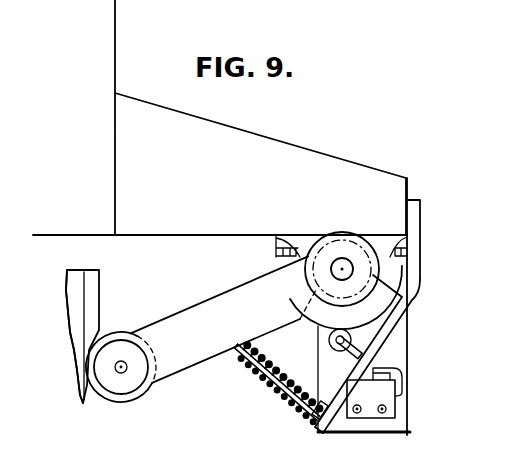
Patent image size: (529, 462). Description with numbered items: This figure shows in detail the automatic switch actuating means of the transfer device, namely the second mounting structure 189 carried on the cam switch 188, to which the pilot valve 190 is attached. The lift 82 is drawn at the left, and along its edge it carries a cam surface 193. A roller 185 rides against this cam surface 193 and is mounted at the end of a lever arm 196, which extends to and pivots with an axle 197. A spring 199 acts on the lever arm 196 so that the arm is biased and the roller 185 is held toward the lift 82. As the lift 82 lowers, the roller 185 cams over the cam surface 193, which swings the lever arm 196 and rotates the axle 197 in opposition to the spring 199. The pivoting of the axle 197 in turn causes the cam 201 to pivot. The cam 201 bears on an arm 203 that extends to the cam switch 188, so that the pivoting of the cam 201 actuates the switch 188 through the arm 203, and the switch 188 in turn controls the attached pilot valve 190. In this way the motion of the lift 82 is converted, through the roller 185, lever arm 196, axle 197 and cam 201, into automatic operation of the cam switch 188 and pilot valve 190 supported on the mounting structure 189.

The lift 82 is at (70, 381).
The roller 185 is at (135, 392).
The cam switch 188 is at (401, 392).
The second mounting structure 189 is at (424, 231).
The pilot valve 190 is at (409, 428).
The cam surface 193 is at (103, 296).
The lever arm 196 is at (226, 289).
The axle 197 is at (347, 258).
The spring 199 is at (272, 382).
The cam 201 is at (403, 267).
The arm 203 is at (396, 362).